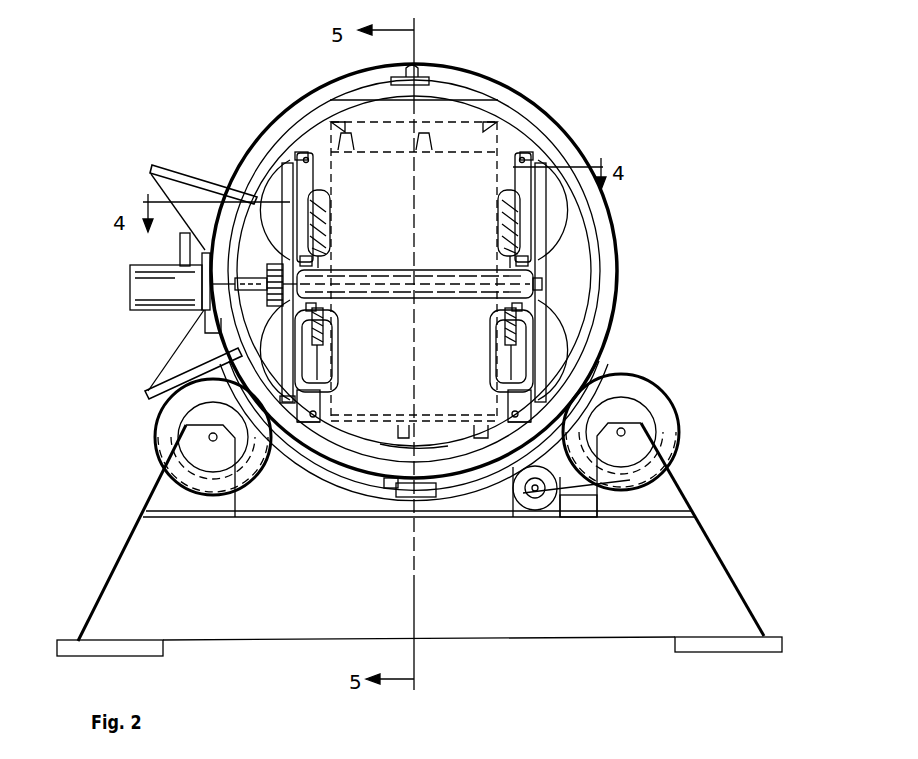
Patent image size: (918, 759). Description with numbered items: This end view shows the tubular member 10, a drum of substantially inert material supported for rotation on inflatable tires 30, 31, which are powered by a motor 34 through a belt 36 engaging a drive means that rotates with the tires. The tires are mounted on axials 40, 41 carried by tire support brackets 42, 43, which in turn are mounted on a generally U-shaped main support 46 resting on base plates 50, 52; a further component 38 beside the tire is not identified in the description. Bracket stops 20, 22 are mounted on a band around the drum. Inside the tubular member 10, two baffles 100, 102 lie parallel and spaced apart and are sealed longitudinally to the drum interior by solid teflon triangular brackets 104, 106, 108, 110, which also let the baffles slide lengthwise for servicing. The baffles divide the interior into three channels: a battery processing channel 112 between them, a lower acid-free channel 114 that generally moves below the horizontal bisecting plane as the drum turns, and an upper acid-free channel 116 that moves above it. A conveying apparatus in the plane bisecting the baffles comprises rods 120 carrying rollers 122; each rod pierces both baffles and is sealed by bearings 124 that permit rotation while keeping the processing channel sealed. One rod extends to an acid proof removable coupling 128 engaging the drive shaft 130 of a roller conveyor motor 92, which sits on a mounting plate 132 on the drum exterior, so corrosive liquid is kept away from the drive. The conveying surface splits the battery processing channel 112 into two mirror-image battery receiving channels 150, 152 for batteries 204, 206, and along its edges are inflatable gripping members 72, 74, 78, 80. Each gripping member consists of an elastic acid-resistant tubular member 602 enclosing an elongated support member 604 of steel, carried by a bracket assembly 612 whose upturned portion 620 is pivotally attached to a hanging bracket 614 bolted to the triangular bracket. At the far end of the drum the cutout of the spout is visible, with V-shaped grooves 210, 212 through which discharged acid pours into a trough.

The tubular member 10 is at (486, 97).
The bracket stop 20 is at (170, 160).
The bracket stop 22 is at (142, 395).
The inflatable tire 30 is at (671, 426).
The inflatable tire 31 is at (155, 430).
The motor 34 is at (514, 494).
The belt 36 is at (579, 506).
The right pedestal 38 is at (654, 437).
The axial 40 is at (626, 431).
The axial 41 is at (209, 438).
The tire support bracket 42 is at (669, 496).
The tire support bracket 43 is at (170, 490).
The main support 46 is at (719, 578).
The base plate 50 is at (769, 637).
The base plate 52 is at (67, 645).
The inflatable gripping member 72 is at (326, 217).
The inflatable gripping member 74 is at (496, 205).
The inflatable gripping member 78 is at (338, 368).
The inflatable gripping member 80 is at (490, 367).
The roller conveyor motor 92 is at (148, 285).
The baffle 100 is at (290, 330).
The baffle 102 is at (545, 315).
The triangular bracket 104 is at (540, 160).
The triangular bracket 106 is at (515, 482).
The triangular bracket 108 is at (289, 405).
The triangular bracket 110 is at (290, 163).
The battery processing channel 112 is at (392, 484).
The acid-free channel 114 is at (578, 292).
The acid-free channel 116 is at (244, 335).
The rod 120 is at (358, 272).
The roller 122 is at (426, 272).
The bearing 124 is at (278, 252).
The acid proof removable coupling 128 is at (267, 278).
The drive shaft 130 is at (237, 306).
The mounting plate 132 is at (180, 255).
The battery receiving channel 150 is at (400, 497).
The battery receiving channel 152 is at (369, 115).
The battery 204 is at (384, 160).
The battery 206 is at (396, 410).
The V-shaped groove 210 is at (433, 115).
The V-shaped groove 212 is at (436, 460).
The elastic acid-resistant tubular member 602 is at (322, 200).
The elongated support member 604 is at (506, 236).
The bracket assembly 612 is at (530, 262).
The hanging bracket 614 is at (297, 152).
The upturned portion 620 is at (312, 168).